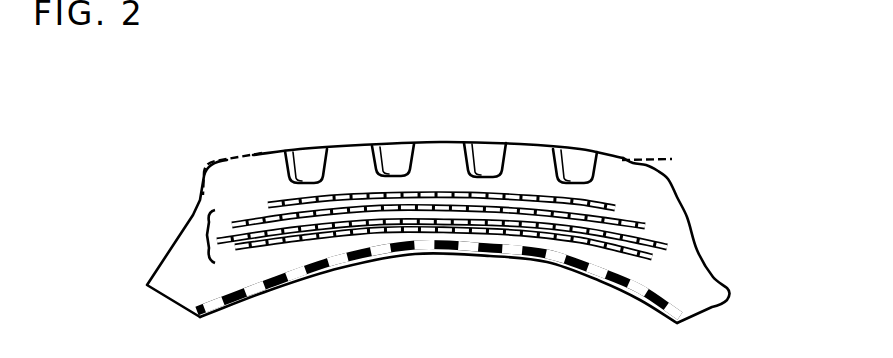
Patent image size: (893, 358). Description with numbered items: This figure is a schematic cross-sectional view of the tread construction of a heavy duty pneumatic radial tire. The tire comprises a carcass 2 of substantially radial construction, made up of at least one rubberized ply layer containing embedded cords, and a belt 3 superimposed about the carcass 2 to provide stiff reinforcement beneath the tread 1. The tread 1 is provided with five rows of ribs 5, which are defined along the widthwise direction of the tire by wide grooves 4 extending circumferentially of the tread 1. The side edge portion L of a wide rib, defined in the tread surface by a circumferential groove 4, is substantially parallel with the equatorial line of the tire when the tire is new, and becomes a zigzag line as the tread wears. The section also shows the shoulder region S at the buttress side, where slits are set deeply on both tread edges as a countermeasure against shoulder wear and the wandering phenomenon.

The tread 1 is at (710, 239).
The carcass 2 is at (673, 298).
The belt 3 is at (208, 235).
The wide grooves 4 is at (584, 172).
The ribs 5 is at (272, 168).
The shoulder profile S is at (684, 147).
The side edge portion L is at (472, 148).